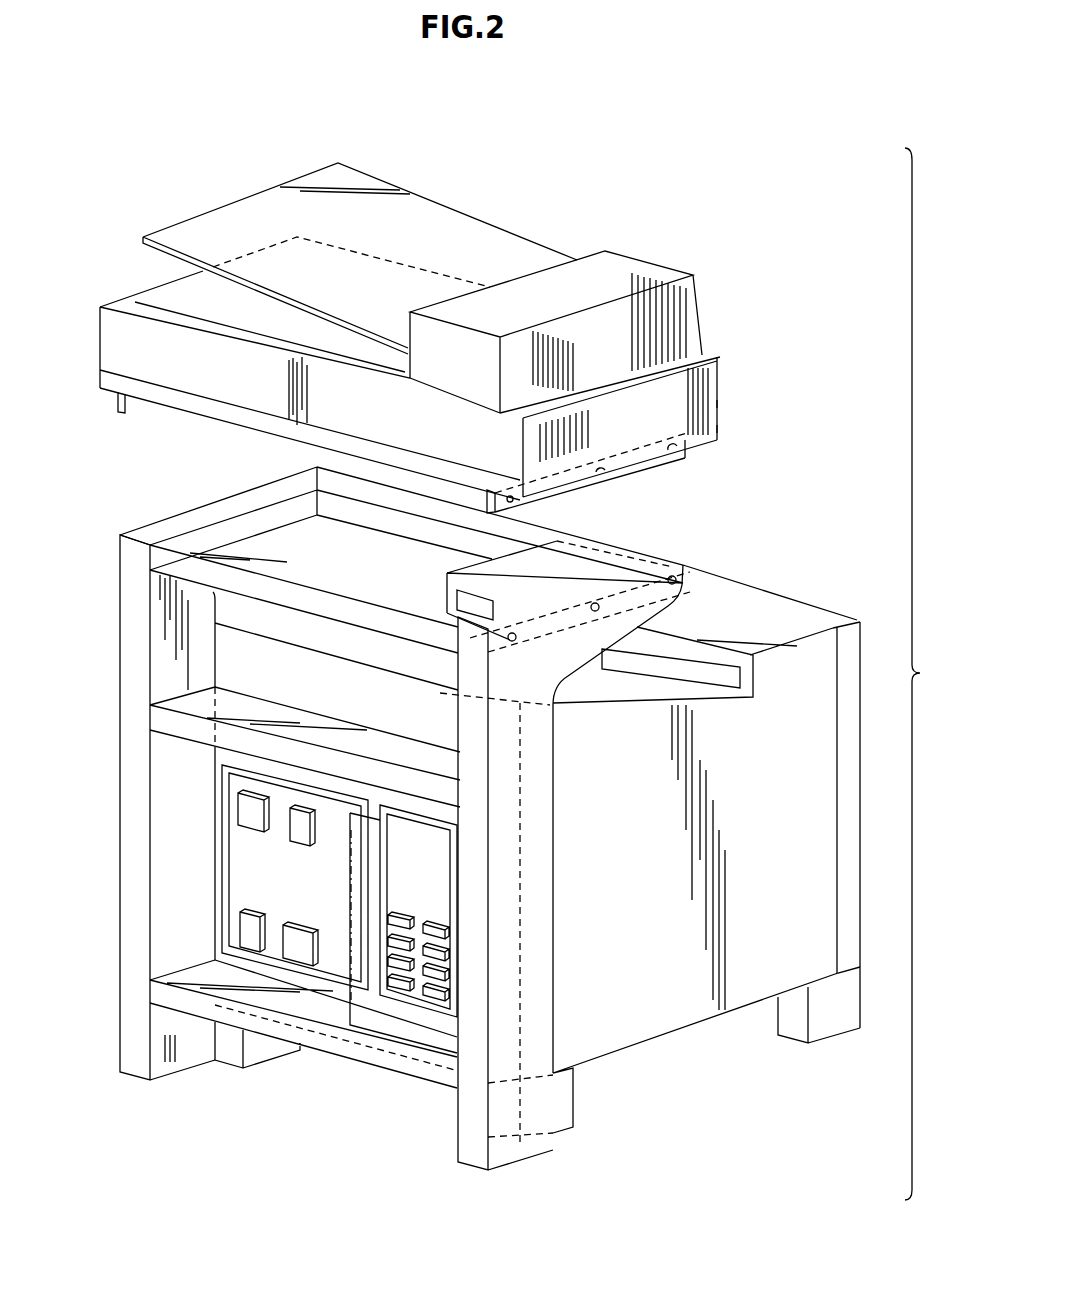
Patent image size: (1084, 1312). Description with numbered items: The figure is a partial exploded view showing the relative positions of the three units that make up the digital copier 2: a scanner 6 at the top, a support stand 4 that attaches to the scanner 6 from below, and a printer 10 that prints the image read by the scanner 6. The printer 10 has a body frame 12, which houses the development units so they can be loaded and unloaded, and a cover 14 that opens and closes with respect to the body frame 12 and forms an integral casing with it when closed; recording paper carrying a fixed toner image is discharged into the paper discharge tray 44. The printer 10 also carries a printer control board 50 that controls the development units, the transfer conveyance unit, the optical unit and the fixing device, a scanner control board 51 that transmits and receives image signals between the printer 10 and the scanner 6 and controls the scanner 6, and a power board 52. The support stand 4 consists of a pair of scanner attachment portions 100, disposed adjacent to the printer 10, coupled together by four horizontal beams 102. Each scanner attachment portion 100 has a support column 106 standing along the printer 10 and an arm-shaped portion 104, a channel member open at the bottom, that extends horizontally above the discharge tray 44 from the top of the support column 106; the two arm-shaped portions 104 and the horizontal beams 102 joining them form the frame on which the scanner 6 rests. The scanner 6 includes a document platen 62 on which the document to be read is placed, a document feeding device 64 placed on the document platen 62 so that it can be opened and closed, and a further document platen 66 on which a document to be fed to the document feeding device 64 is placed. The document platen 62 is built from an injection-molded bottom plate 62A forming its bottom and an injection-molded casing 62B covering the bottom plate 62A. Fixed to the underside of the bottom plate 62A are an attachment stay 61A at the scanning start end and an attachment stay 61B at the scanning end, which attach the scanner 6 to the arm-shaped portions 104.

The digital copier 2 is at (479, 810).
The support stand 4 is at (452, 810).
The scanner 6 is at (454, 347).
The printer 10 is at (777, 597).
The body frame 12 is at (693, 1007).
The cover 14 is at (845, 718).
The paper discharge tray 44 is at (640, 680).
The printer control board 50 is at (433, 882).
The scanner control board 51 is at (335, 862).
The power board 52 is at (303, 892).
The attachment stay 61A is at (653, 468).
The attachment stay 61B is at (127, 406).
The document platen 62 is at (717, 375).
The bottom plate 62A is at (717, 428).
The casing 62B is at (717, 403).
The document feeding device 64 is at (688, 300).
The document platen 66 is at (493, 237).
The scanner attachment portion 100 is at (205, 842).
The horizontal beam 102 is at (385, 517).
The arm-shaped portion 104 is at (237, 525).
The support column 106 is at (130, 883).